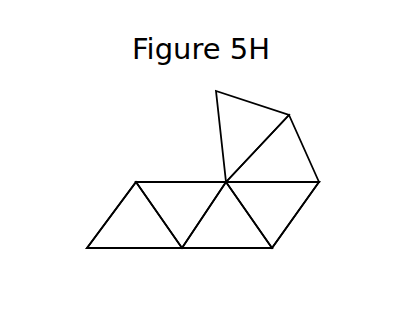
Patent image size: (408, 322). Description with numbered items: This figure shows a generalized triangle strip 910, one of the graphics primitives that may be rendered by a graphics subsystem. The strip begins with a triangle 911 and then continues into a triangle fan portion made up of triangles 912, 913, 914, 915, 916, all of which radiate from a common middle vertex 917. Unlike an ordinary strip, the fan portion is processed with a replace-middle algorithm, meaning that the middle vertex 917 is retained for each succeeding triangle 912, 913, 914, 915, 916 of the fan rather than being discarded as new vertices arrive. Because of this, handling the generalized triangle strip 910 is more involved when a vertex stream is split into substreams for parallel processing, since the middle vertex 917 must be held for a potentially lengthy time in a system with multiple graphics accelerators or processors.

The generalized triangle strip 910 is at (88, 135).
The triangle of the generalized triangle strip 911 is at (130, 227).
The triangle of the triangle fan portion 912 is at (175, 195).
The triangle of the triangle fan portion 913 is at (227, 227).
The triangle of the triangle fan portion 914 is at (282, 198).
The triangle of the triangle fan portion 915 is at (280, 157).
The triangle of the triangle fan portion 916 is at (232, 135).
The middle vertex 917 is at (218, 178).